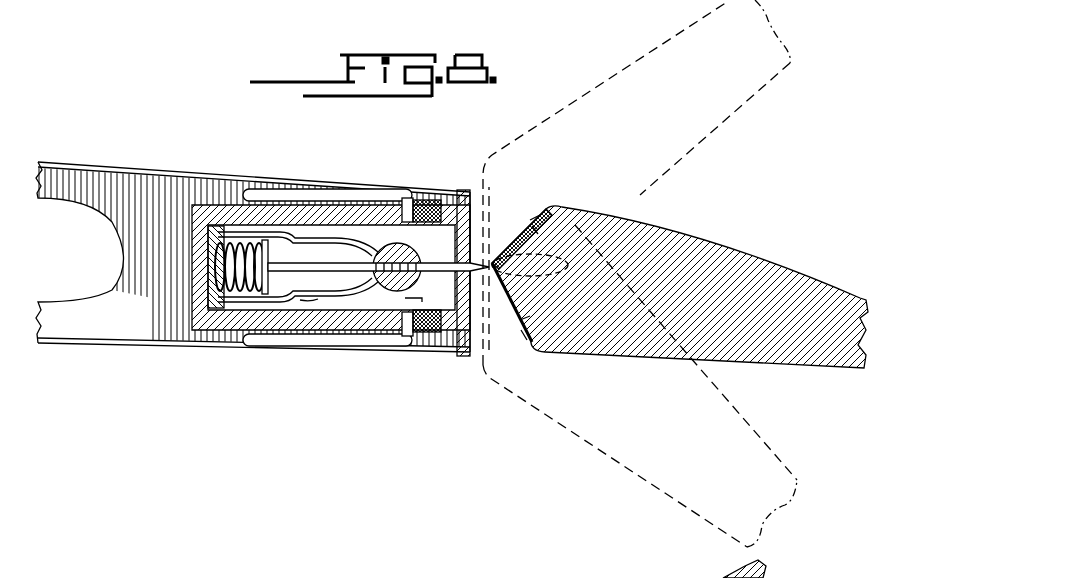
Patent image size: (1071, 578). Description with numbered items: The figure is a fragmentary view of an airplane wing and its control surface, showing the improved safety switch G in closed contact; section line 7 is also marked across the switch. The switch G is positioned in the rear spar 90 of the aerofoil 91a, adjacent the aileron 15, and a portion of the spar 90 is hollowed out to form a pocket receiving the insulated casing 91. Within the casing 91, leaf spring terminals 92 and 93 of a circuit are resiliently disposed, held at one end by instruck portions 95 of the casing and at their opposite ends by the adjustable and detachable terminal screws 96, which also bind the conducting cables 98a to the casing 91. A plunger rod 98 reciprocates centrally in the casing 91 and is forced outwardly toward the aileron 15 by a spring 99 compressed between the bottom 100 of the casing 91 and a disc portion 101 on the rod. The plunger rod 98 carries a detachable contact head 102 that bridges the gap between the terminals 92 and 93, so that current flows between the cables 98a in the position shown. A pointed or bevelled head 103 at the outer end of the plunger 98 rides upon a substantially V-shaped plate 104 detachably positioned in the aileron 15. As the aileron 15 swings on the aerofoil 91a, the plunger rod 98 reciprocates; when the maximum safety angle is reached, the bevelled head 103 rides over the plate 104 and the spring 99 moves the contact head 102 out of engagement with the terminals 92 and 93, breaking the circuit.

The aileron 15 is at (740, 258).
The rear spar 90 is at (224, 206).
The insulated casing 91 is at (208, 232).
The aerofoil 91a is at (82, 185).
The leaf spring terminal 92 is at (318, 243).
The leaf spring terminal 93 is at (318, 297).
The instruck portions 95 is at (301, 299).
The terminal screws 96 is at (468, 194).
The plunger rod 98 is at (422, 268).
The conducting cables 98a is at (313, 372).
The spring 99 is at (252, 280).
The bottom of the casing 100 is at (212, 266).
The disc portion 101 is at (268, 247).
The contact head 102 is at (421, 299).
The bevelled head 103 is at (493, 253).
The V-shaped plate 104 is at (502, 308).
The section line 7- 7 is at (352, 186).
The safety switch G is at (265, 336).